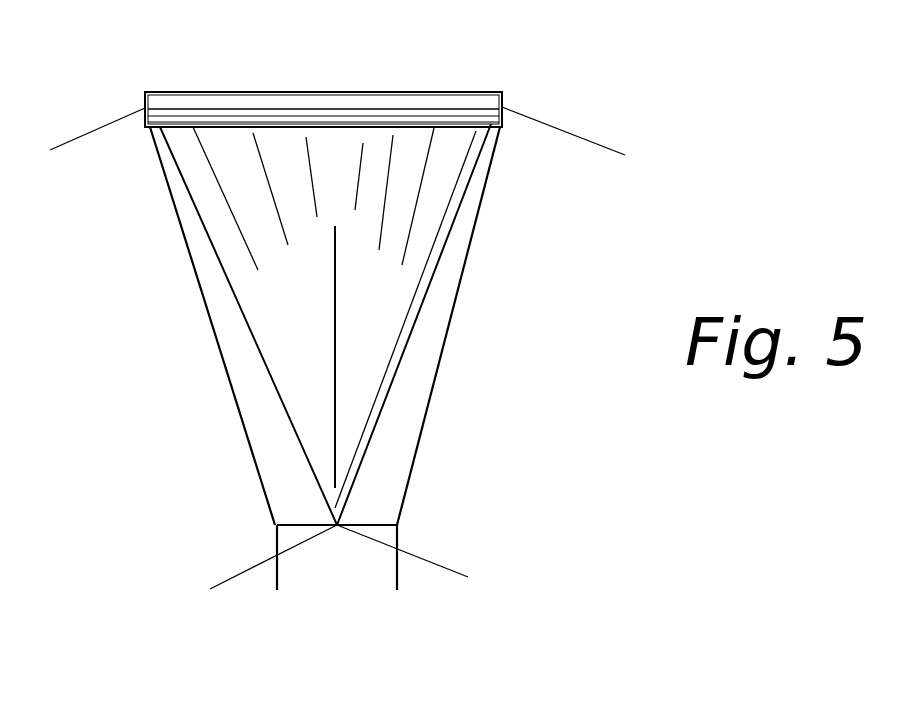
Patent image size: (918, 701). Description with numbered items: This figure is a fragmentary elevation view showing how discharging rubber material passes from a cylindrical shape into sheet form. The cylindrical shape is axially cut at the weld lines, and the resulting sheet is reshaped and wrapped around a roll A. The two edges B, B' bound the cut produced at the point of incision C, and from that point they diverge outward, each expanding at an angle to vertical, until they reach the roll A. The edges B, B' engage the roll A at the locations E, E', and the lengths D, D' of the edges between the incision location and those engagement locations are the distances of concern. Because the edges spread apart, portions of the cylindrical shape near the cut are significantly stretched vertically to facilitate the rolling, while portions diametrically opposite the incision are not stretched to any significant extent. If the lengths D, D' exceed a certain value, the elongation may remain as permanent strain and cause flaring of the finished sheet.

The roll A is at (370, 108).
The edge B is at (413, 324).
The edge B' is at (248, 326).
The point of incision C is at (336, 530).
The length of edge D is at (544, 338).
The length of edge D' is at (146, 333).
The location of engagement with roll E is at (531, 75).
The location of engagement with roll E' is at (126, 76).